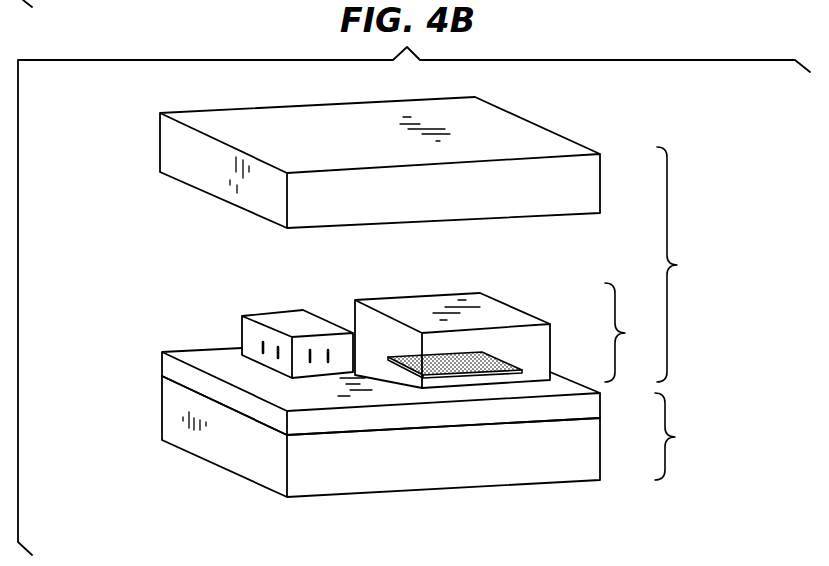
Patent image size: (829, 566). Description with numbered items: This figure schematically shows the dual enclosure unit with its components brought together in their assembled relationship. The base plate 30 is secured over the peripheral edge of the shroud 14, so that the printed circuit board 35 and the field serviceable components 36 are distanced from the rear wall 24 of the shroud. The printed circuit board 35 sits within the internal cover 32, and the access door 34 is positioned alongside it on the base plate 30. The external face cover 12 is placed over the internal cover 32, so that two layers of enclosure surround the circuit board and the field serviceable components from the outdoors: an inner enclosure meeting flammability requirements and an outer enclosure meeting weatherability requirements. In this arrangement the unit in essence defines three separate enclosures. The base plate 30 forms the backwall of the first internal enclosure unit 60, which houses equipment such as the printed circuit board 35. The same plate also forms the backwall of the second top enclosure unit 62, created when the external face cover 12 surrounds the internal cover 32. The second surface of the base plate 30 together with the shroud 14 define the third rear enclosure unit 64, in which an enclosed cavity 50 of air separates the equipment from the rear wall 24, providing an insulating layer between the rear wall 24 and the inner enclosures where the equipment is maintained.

The external face cover 12 is at (583, 193).
The shroud 14 is at (585, 462).
The rear wall 24 is at (381, 501).
The base plate 30 is at (592, 407).
The internal cover 32 is at (488, 302).
The access door 34 is at (242, 325).
The printed circuit board 35 is at (497, 357).
The field serviceable components 36 is at (263, 345).
The enclosed cavity 50 is at (482, 457).
The first internal enclosure unit 60 is at (632, 332).
The second top enclosure unit 62 is at (685, 264).
The third rear enclosure unit 64 is at (683, 436).